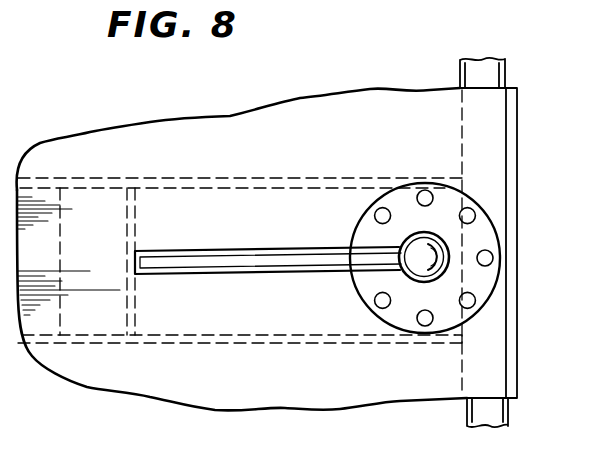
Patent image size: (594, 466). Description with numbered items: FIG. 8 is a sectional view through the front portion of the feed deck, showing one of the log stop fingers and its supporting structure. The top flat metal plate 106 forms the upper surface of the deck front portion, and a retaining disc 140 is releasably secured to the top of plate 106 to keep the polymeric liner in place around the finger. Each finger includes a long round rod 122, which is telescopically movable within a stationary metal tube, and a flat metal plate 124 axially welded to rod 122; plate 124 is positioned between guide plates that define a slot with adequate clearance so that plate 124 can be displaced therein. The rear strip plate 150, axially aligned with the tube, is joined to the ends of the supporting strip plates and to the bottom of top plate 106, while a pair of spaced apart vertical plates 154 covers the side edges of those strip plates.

The top flat metal plate 106 is at (144, 372).
The round rod 122 is at (451, 251).
The flat metal plate 124 is at (205, 258).
The retaining disc 140 is at (480, 283).
The rear strip plate 150 is at (127, 245).
The vertical plates 154 is at (326, 178).